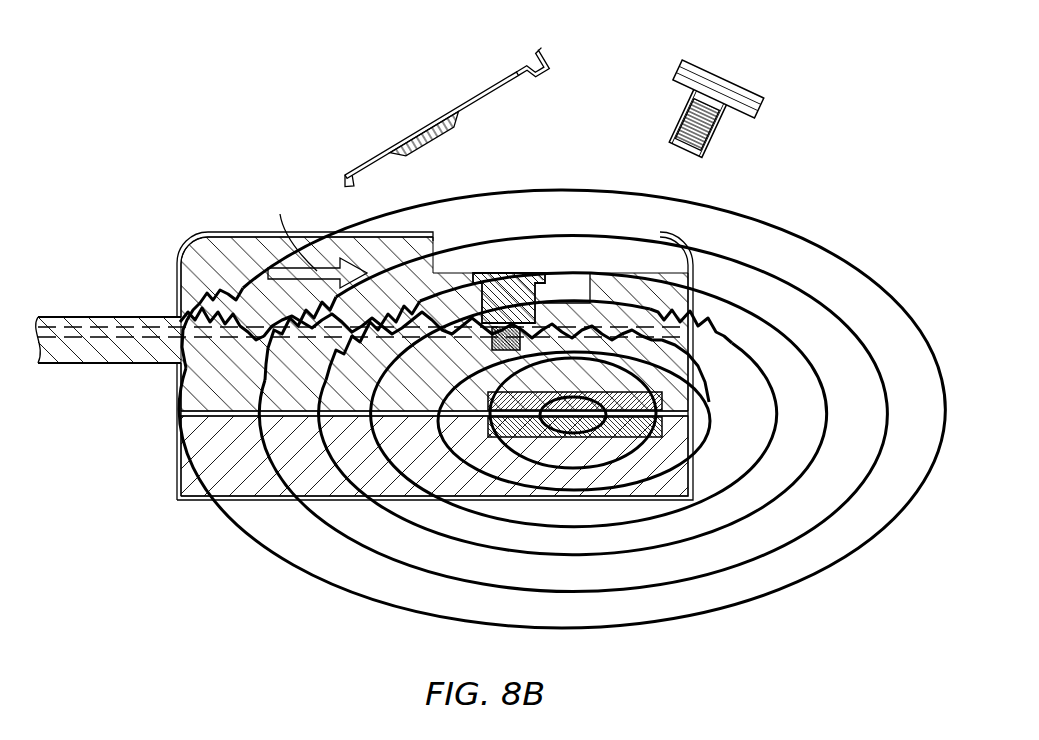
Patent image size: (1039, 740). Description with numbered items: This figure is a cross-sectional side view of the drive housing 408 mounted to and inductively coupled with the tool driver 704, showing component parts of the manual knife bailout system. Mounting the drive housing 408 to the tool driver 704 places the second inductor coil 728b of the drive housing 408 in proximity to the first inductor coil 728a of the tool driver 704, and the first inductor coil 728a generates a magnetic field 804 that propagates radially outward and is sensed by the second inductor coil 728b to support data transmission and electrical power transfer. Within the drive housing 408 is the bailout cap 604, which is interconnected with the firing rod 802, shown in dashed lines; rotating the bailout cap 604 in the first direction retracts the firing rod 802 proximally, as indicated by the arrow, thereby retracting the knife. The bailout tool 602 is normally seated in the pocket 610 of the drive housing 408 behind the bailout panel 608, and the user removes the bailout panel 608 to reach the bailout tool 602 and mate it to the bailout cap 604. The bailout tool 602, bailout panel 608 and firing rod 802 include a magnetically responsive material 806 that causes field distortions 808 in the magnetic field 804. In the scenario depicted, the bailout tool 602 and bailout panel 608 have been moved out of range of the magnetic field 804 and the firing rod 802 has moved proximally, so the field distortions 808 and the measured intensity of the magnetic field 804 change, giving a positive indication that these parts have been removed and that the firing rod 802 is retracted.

The drive housing 408 is at (191, 234).
The tool driver 704 is at (200, 504).
The firing rod 802 is at (100, 340).
The magnetic field 804 is at (341, 590).
The field distortions 808 is at (272, 342).
The first inductor coil 728a is at (665, 437).
The second inductor coil 728b is at (665, 394).
The bailout cap 604 is at (497, 290).
The pocket 610 is at (612, 320).
The bailout panel 608 is at (492, 93).
The magnetically responsive material 806 is at (430, 137).
The bailout tool 602 is at (722, 82).